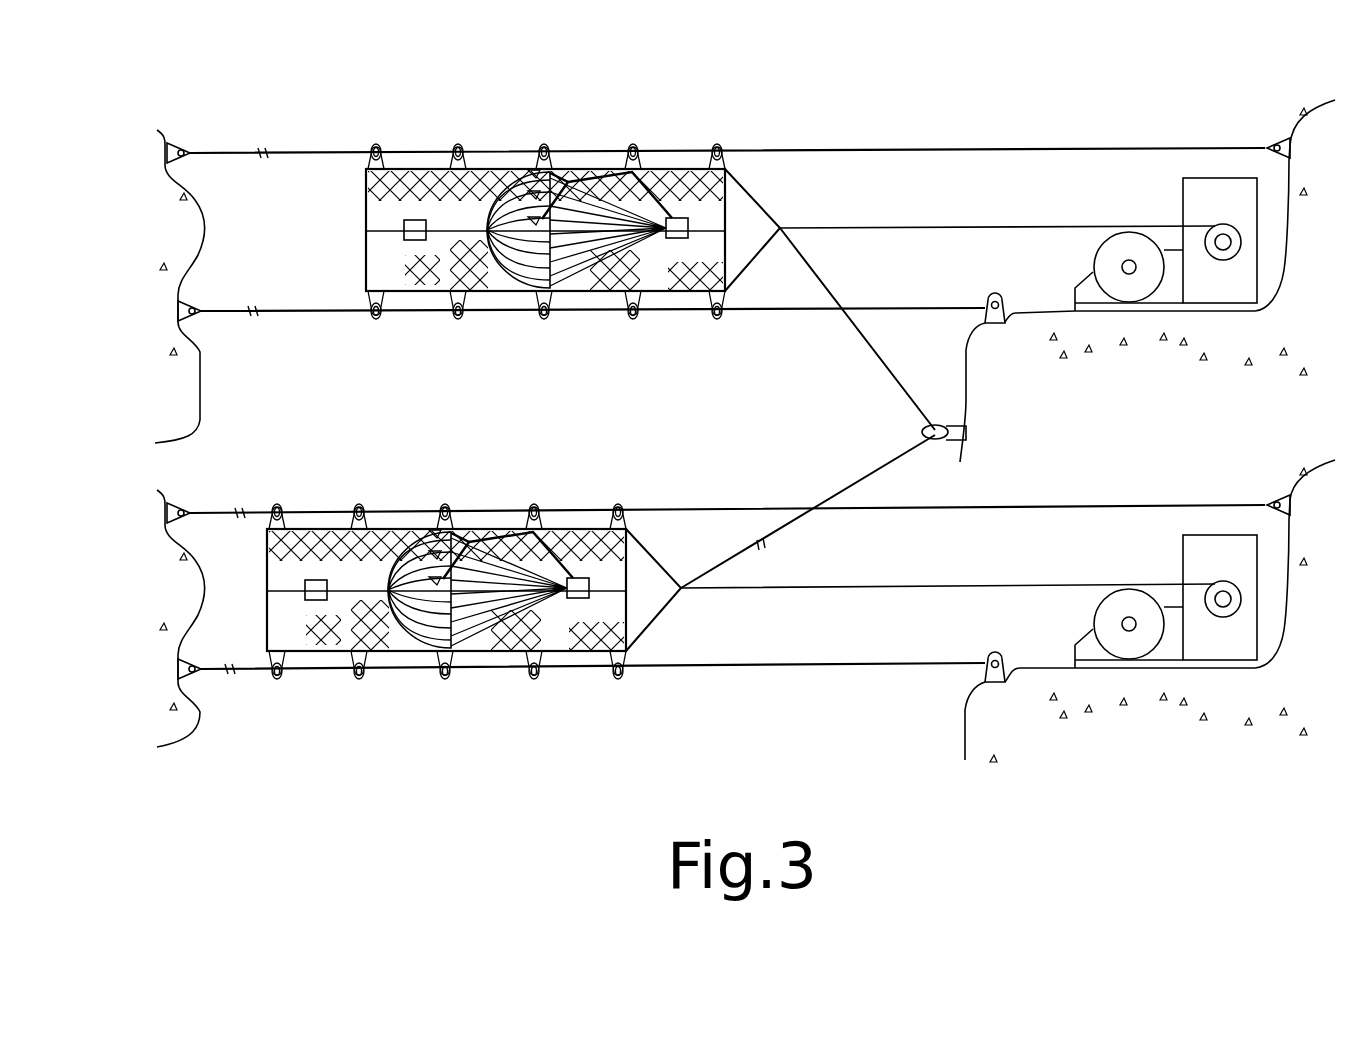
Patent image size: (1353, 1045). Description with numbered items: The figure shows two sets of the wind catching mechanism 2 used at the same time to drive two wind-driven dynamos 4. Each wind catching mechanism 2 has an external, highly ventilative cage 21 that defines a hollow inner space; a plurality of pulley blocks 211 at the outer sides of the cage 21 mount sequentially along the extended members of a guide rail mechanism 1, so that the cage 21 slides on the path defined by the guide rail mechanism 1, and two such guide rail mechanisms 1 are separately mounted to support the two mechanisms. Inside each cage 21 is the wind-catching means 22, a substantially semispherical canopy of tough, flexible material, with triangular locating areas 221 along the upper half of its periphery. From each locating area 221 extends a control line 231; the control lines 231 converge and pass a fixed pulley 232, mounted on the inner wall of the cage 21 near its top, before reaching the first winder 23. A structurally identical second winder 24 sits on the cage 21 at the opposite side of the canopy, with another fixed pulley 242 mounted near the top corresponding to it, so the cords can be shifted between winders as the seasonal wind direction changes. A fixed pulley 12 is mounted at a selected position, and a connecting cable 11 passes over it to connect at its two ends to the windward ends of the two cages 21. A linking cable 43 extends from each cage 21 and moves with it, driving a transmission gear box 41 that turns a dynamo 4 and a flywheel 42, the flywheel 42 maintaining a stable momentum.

The guide rail mechanism 1 is at (858, 148).
The connecting cable 11 is at (830, 282).
The fixed pulley 12 is at (922, 436).
The wind catching mechanism 2 is at (590, 118).
The cage 21 is at (423, 180).
The pulley blocks 211 is at (724, 150).
The wind-catching means 22 is at (515, 180).
The locating areas 221 is at (577, 292).
The first winder 23 is at (672, 216).
The control lines 231 is at (582, 180).
The fixed pulley 232 is at (640, 174).
The second winder 24 is at (416, 233).
The fixed pulley 242 is at (470, 182).
The wind-driven dynamo 4 is at (1090, 290).
The transmission gear box 41 is at (1197, 190).
The flywheel 42 is at (1120, 240).
The linking cable 43 is at (917, 227).